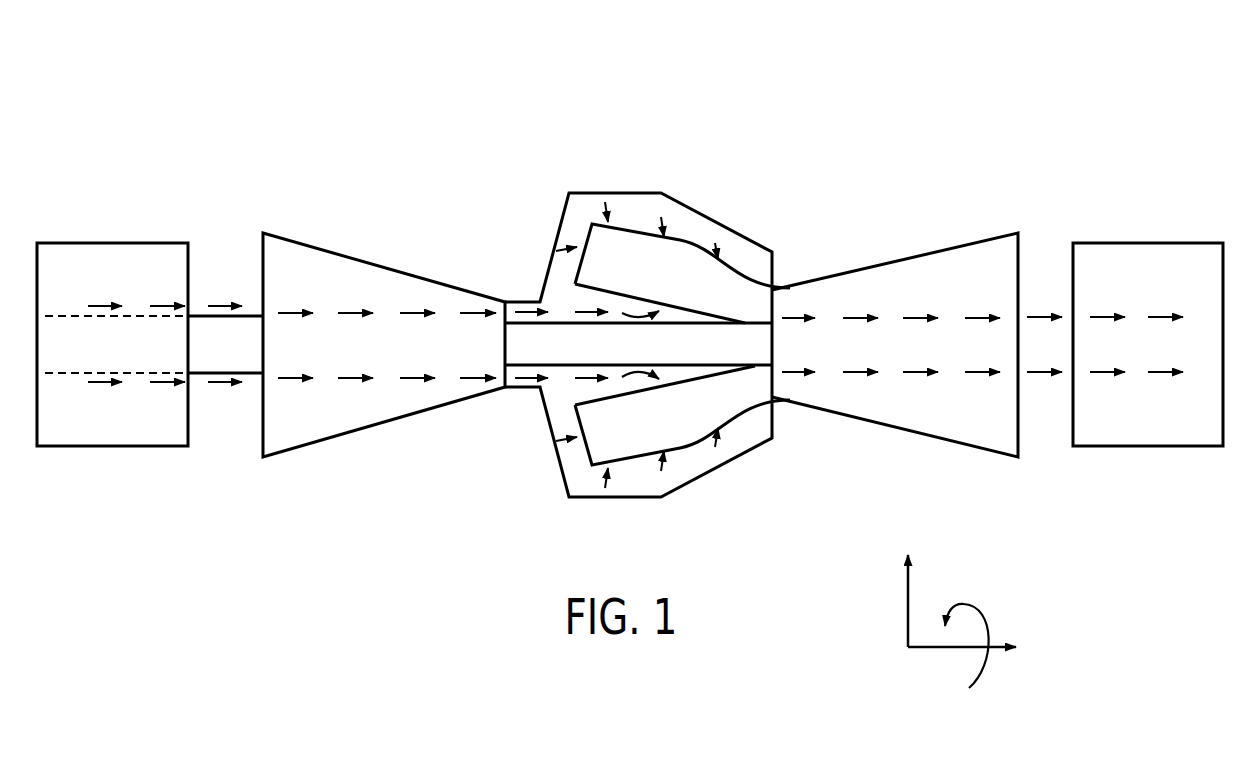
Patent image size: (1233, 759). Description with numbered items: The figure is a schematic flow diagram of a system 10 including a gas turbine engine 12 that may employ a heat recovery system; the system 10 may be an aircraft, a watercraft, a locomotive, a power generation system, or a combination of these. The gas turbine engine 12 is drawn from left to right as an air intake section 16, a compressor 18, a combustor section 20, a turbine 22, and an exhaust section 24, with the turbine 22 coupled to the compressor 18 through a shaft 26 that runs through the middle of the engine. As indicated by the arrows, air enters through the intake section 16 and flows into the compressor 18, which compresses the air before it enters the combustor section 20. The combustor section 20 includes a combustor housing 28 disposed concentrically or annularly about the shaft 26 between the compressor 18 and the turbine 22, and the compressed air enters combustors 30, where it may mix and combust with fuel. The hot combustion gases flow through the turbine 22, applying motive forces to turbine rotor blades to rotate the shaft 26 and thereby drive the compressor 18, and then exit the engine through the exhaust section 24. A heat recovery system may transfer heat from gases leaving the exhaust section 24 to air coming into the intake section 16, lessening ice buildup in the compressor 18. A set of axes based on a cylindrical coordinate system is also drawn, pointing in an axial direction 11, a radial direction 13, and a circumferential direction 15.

The system 10 is at (958, 50).
The axial direction 11 is at (927, 650).
The gas turbine engine 12 is at (640, 146).
The radial direction 13 is at (908, 600).
The circumferential direction 15 is at (975, 672).
The air intake section 16 is at (110, 243).
The compressor 18 is at (382, 267).
The combustor section 20 is at (745, 224).
The turbine 22 is at (885, 262).
The exhaust section 24 is at (1147, 243).
The shaft 26 is at (708, 356).
The combustor housing 28 is at (672, 196).
The combustors 30 is at (633, 456).